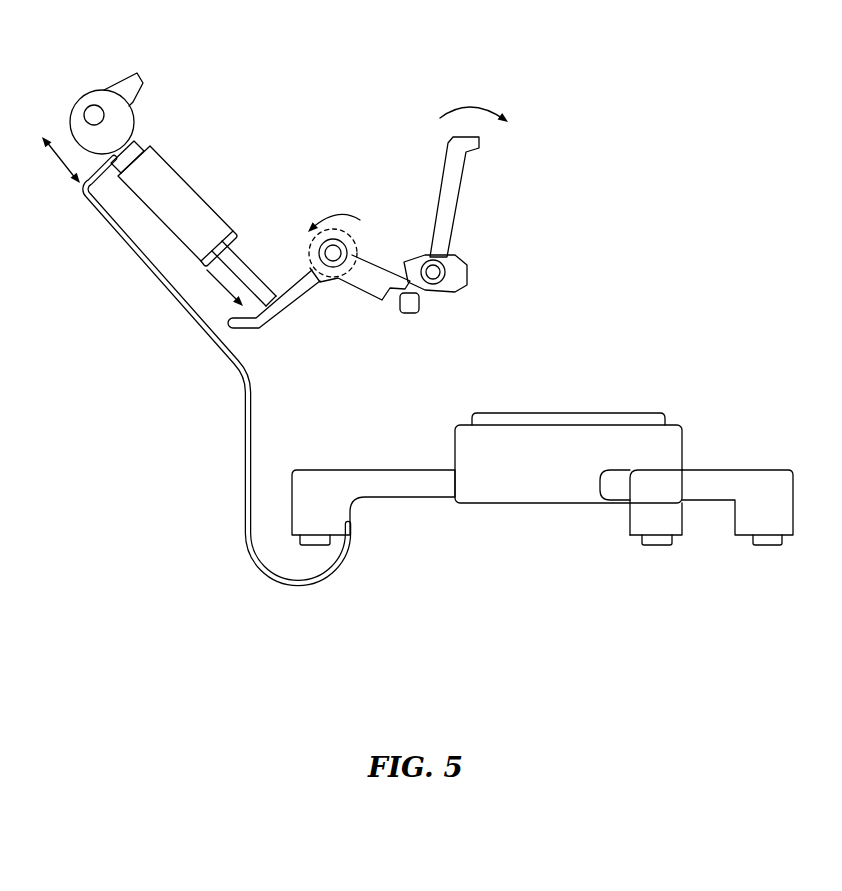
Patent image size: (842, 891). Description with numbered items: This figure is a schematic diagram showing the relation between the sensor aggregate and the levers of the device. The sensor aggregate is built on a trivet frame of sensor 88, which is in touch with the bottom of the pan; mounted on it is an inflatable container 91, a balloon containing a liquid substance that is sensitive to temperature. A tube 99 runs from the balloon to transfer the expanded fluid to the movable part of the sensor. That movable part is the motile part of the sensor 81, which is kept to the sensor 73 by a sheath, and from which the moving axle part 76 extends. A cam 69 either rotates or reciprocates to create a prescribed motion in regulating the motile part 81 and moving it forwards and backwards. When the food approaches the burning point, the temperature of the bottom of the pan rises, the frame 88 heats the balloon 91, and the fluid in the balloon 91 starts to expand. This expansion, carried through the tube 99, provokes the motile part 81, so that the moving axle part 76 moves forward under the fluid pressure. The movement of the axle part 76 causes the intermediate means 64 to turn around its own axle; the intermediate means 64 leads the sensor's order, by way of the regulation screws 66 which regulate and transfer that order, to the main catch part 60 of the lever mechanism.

The main catch part 60 is at (453, 180).
The intermediate means 64 is at (315, 285).
The regulation screws 66 is at (400, 308).
The cam 69 is at (76, 115).
The sensor 73 is at (170, 200).
The moving axle part 76 is at (248, 277).
The motile part of the sensor 81 is at (137, 142).
The trivet frame of sensor 88 is at (513, 453).
The inflatable container 91 is at (568, 418).
The tube 99 is at (250, 455).